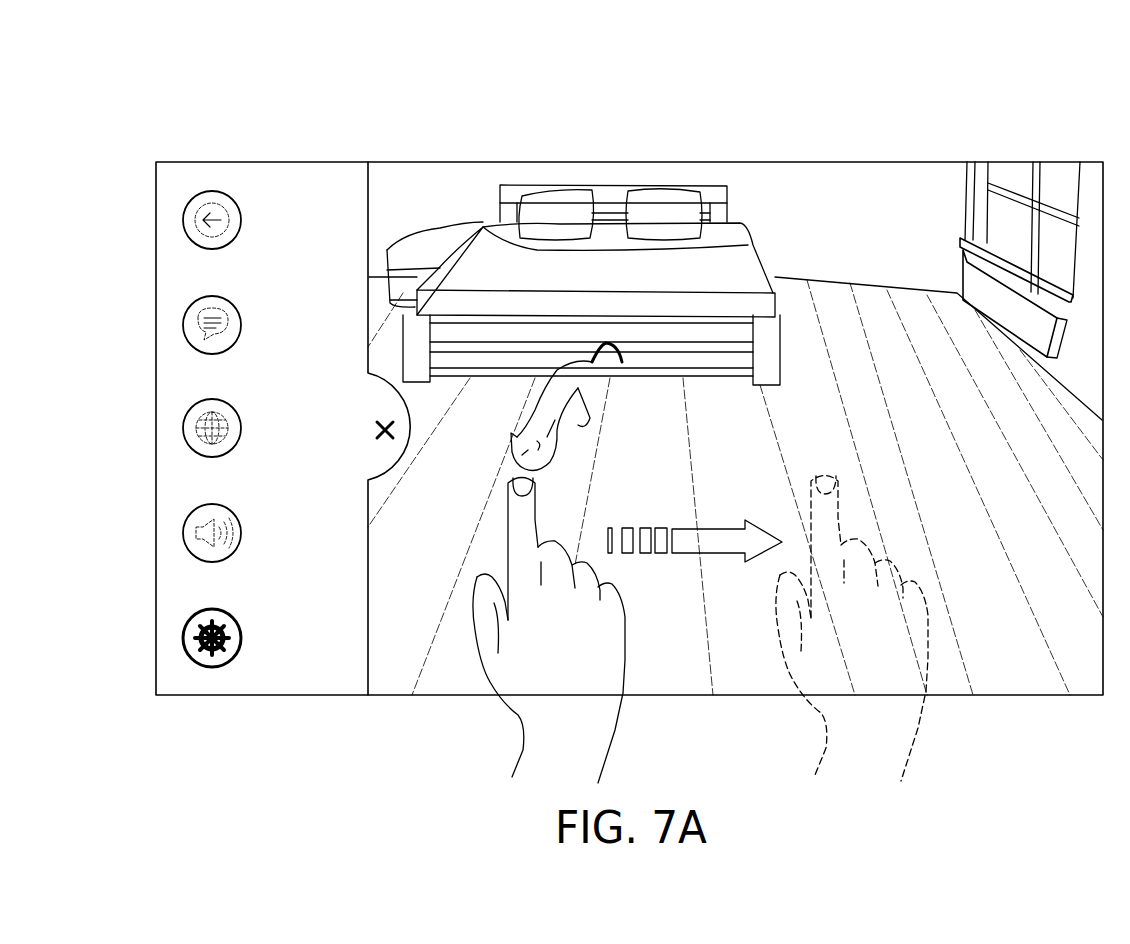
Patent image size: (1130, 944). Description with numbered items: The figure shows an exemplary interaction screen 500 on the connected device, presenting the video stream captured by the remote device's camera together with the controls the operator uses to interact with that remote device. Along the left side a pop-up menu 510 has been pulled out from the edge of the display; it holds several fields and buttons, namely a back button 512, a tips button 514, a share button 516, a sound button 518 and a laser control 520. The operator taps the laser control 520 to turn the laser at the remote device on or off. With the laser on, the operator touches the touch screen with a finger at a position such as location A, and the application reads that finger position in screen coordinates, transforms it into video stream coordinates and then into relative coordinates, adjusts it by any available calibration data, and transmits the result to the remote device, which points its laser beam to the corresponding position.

The interaction screen 500 is at (937, 123).
The pop-up menu 510 is at (237, 152).
The back button 512 is at (183, 220).
The tips button 514 is at (183, 325).
The share button 516 is at (183, 428).
The sound button 518 is at (183, 533).
The laser control 520 is at (183, 638).
The location A is at (520, 472).